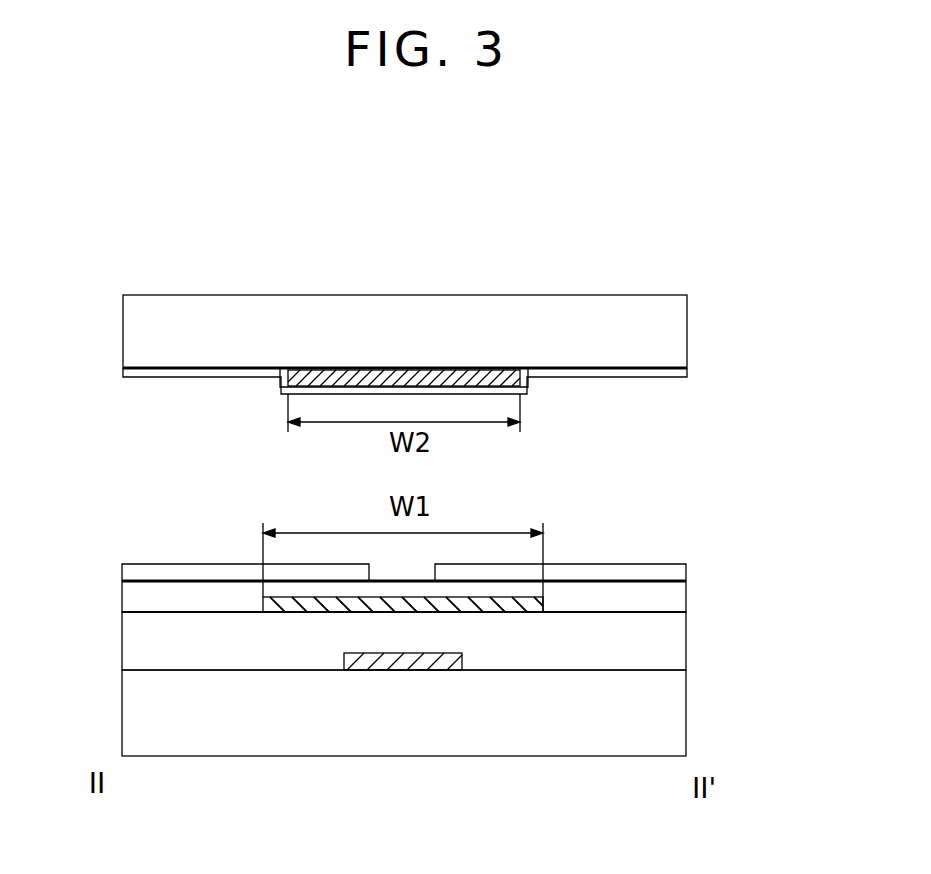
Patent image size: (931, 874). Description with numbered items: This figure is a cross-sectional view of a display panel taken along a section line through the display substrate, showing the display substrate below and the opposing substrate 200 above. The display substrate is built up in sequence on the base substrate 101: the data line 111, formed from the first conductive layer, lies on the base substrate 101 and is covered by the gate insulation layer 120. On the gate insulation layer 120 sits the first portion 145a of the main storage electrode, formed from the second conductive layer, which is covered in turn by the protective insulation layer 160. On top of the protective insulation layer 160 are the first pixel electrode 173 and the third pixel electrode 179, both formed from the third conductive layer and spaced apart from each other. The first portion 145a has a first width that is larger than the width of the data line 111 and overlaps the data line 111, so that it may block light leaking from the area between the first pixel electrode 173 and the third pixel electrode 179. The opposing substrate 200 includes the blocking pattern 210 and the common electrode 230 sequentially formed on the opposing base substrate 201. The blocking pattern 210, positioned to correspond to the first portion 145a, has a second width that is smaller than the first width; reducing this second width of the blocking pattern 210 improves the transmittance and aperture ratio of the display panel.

The opposing substrate 200 is at (112, 296).
The opposing base substrate 201 is at (681, 330).
The common electrode 230 is at (686, 375).
The blocking pattern 210 is at (400, 374).
The third pixel electrode 179 is at (128, 572).
The first pixel electrode 173 is at (680, 573).
The protective insulation layer 160 is at (680, 601).
The first portion of the main storage electrode 145a is at (498, 606).
The gate insulation layer 120 is at (680, 646).
The data line 111 is at (398, 672).
The base substrate 101 is at (680, 726).